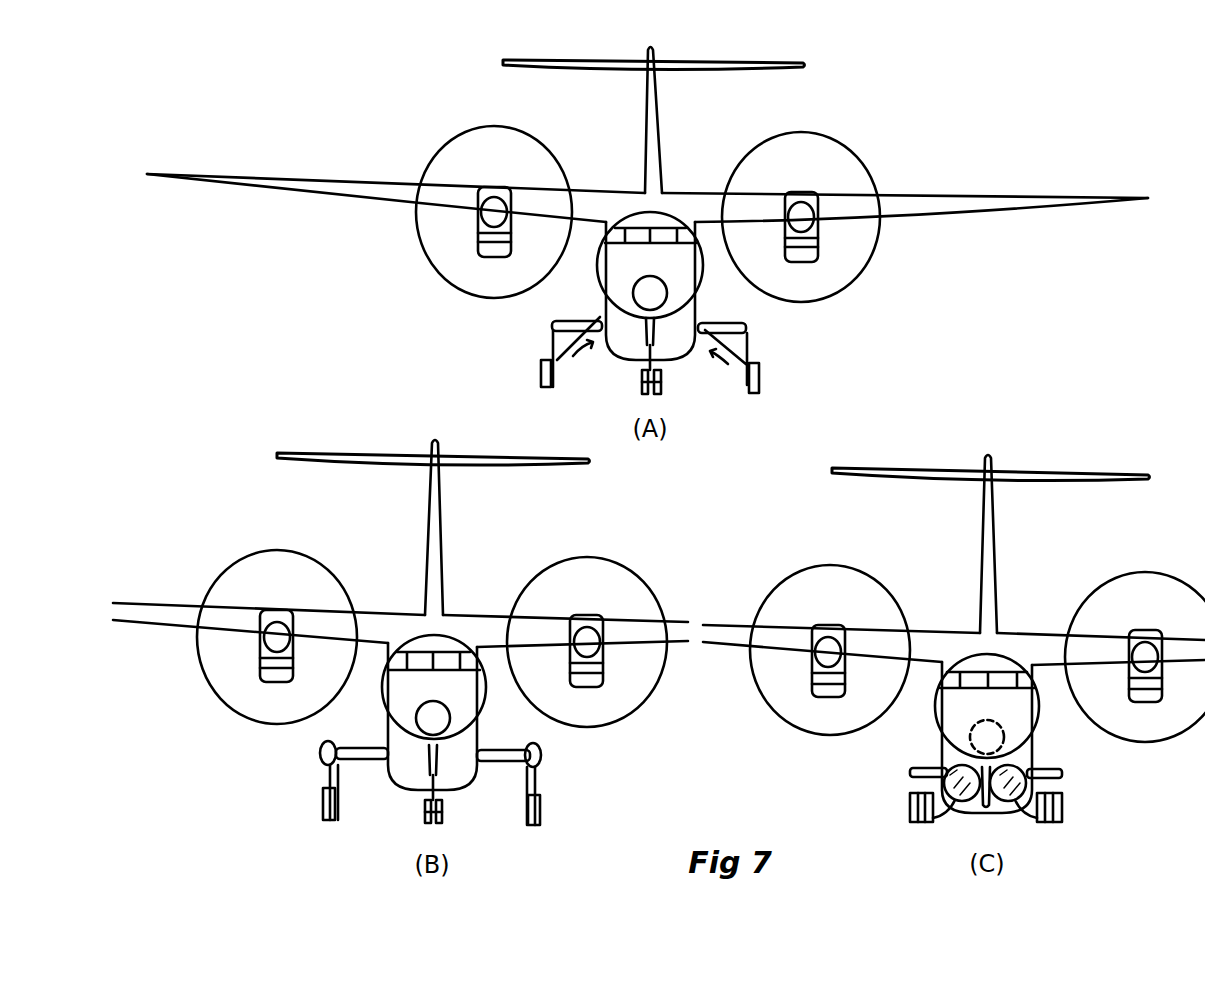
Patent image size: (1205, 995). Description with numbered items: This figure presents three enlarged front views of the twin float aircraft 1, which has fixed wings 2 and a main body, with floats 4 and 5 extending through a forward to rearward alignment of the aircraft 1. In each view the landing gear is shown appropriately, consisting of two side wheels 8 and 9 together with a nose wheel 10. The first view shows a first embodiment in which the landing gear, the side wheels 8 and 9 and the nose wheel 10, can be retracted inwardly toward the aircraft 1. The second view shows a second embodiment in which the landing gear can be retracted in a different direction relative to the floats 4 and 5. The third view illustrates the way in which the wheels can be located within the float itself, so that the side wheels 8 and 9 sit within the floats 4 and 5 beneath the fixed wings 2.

The twin float aircraft 1 is at (615, 198).
The fixed wings 2 is at (342, 193).
The float 4 is at (678, 350).
The float 5 is at (635, 350).
The side wheel 8 is at (759, 382).
The side wheel 9 is at (548, 387).
The nose wheel 10 is at (444, 812).